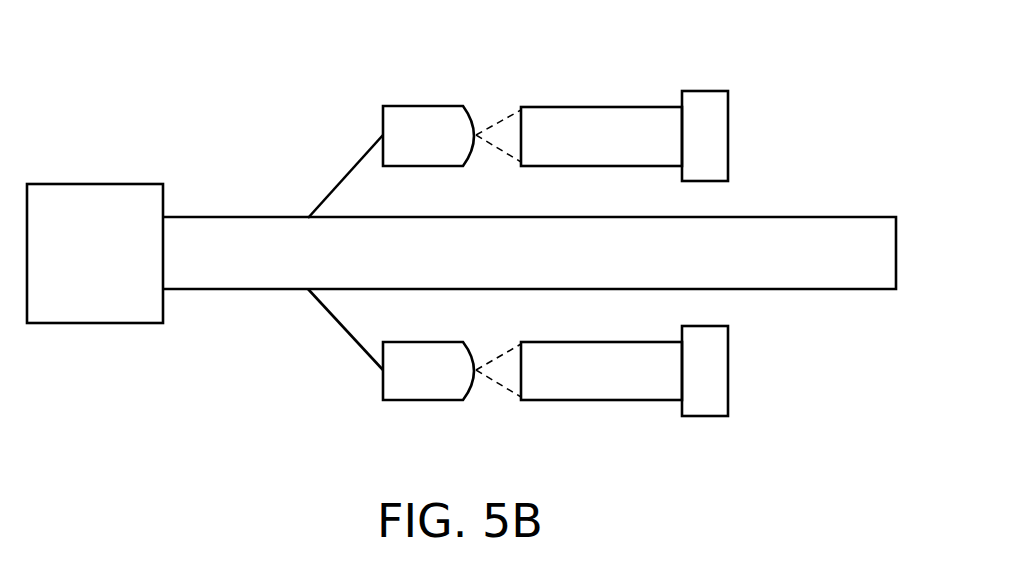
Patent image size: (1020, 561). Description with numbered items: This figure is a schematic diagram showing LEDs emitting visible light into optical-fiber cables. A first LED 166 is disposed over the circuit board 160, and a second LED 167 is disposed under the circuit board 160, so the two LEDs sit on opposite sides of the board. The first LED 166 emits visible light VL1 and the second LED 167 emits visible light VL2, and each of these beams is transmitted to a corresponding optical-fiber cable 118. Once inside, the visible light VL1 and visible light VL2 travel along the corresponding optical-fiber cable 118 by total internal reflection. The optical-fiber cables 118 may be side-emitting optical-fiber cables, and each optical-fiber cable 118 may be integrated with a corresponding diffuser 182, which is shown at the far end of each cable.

The circuit board 160 is at (551, 270).
The first LED 166 is at (423, 106).
The second LED 167 is at (423, 400).
The visible light VL1 is at (501, 108).
The visible light VL2 is at (497, 397).
The optical-fiber cable 118 is at (601, 107).
The diffuser 182 is at (704, 91).